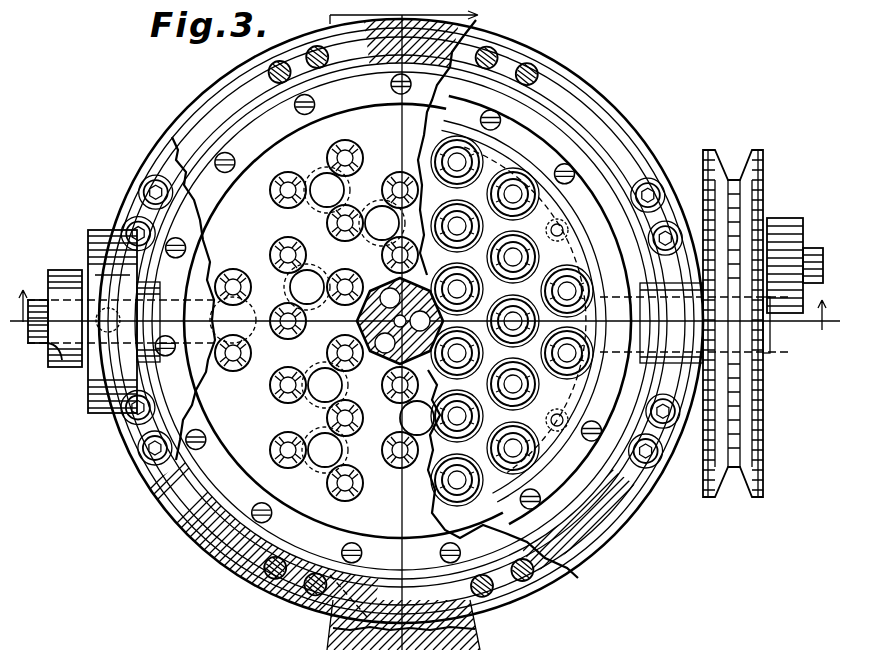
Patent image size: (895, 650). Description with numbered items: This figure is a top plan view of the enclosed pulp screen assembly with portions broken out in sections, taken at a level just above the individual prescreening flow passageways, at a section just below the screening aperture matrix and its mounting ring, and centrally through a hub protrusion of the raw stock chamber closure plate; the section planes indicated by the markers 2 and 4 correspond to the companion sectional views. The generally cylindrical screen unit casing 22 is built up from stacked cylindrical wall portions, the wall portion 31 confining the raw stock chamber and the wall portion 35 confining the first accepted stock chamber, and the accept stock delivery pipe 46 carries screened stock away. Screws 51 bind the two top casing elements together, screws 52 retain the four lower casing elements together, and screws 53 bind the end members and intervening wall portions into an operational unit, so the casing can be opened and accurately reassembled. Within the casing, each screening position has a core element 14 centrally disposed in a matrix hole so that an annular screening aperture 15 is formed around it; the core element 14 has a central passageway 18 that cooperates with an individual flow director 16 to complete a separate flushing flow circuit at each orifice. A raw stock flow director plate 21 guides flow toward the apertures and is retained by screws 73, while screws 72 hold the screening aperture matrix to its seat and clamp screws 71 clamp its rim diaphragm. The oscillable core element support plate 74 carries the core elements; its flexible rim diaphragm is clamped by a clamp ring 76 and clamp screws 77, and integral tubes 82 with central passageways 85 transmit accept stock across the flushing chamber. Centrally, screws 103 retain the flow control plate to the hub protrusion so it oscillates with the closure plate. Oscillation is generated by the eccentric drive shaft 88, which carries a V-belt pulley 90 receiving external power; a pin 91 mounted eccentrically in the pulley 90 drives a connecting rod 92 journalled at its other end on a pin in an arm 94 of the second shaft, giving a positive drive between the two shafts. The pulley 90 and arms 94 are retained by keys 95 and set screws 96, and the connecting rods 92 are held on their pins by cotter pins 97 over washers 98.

The section line 2 is at (419, 20).
The section line 4 is at (419, 332).
The core element 14 is at (396, 172).
The annular screening aperture 15 is at (535, 210).
The flow director 16 is at (470, 160).
The central passageway 18 is at (333, 150).
The raw stock flow director plate 21 is at (572, 263).
The screen unit casing 22 is at (228, 69).
The casing cylindrical wall portion 31 is at (582, 100).
The casing cylindrical wall portion 35 is at (207, 93).
The accept stock delivery pipe 46 is at (300, 36).
The screws 51 is at (148, 183).
The screws 52 is at (592, 60).
The screws 53 is at (505, 52).
The clamp screws 71 is at (501, 122).
The screws 72 is at (558, 403).
The screws 73 is at (546, 228).
The core element support plate 74 is at (378, 131).
The clamp ring 76 is at (280, 137).
The clamp screws 77 is at (315, 101).
The tubes 82 is at (310, 210).
The central fluid communicating passageways 85 is at (320, 176).
The eccentric drive shaft 88 is at (173, 310).
The V-belt pulley 90 is at (758, 163).
The pin 91 is at (820, 248).
The connecting rod 92 is at (67, 273).
The arm 94 is at (108, 230).
The keys 95 is at (768, 350).
The set screws 96 is at (668, 363).
The cotter pins 97 is at (62, 350).
The washers 98 is at (47, 285).
The screws 103 is at (358, 322).